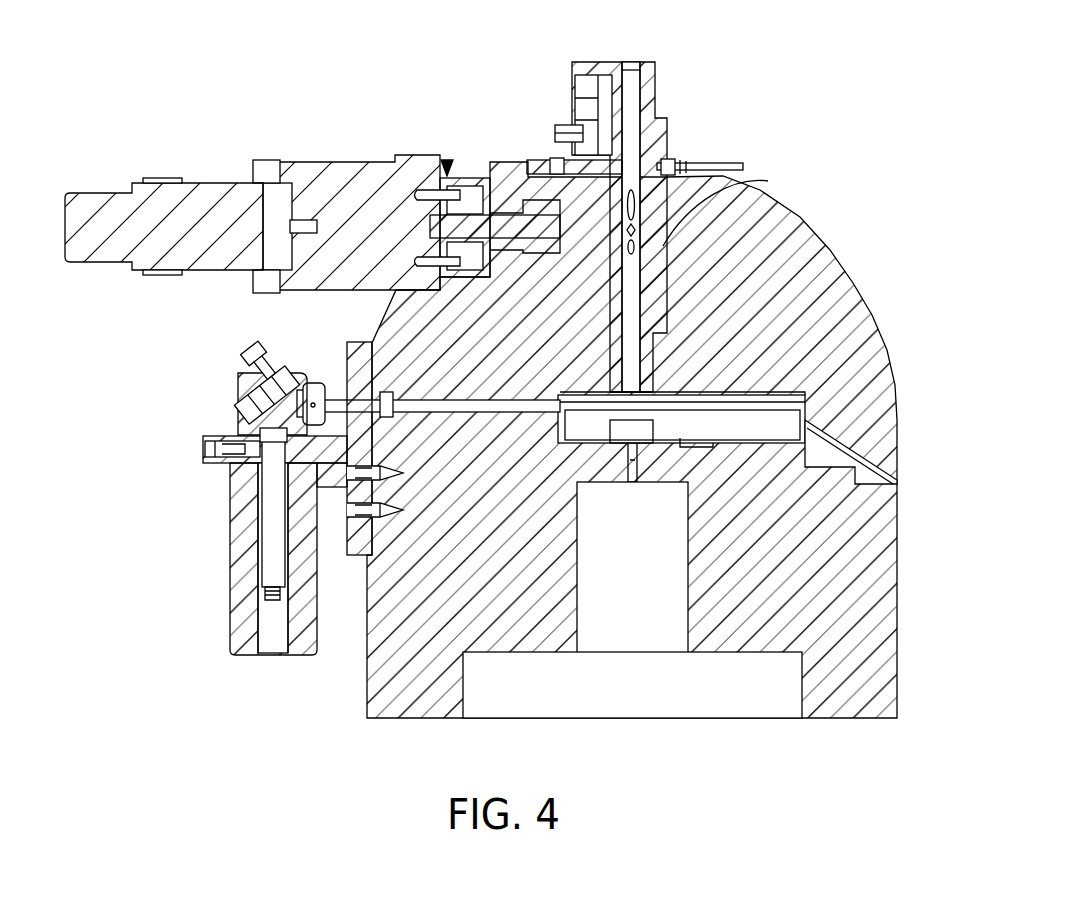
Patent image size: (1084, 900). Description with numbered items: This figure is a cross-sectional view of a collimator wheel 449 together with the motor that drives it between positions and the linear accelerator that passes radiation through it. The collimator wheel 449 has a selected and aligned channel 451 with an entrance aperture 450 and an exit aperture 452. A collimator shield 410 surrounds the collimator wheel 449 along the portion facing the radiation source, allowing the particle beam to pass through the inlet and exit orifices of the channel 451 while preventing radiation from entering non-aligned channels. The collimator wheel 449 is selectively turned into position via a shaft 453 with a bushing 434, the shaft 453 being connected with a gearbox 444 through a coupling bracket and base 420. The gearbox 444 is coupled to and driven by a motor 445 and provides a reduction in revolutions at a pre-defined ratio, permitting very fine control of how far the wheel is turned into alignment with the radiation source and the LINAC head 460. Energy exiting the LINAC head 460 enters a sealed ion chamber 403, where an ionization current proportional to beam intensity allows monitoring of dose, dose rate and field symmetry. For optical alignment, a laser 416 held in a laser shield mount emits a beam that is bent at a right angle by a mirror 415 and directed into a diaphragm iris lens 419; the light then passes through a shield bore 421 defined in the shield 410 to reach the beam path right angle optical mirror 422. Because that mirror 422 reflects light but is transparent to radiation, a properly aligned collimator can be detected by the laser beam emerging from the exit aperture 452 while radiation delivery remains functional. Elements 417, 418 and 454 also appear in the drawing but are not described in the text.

The sealed ion chamber 403 is at (764, 447).
The collimator shield 410 is at (802, 231).
The mirror 415 is at (223, 374).
The laser 416 is at (262, 537).
The bolt head 417 is at (238, 398).
The mounting block assembly 418 is at (270, 498).
The diaphragm iris lens 419 is at (316, 385).
The coupling bracket and base 420 is at (445, 160).
The shield bore 421 is at (440, 402).
The beam path right angle optical mirror 422 is at (705, 389).
The bushing 434 is at (543, 212).
The gearbox 444 is at (347, 158).
The motor 445 is at (126, 200).
The collimator wheel 449 is at (733, 205).
The entrance aperture 450 is at (650, 381).
The channel 451 is at (640, 77).
The exit aperture 452 is at (638, 74).
The shaft 453 is at (568, 186).
The bolt 454 is at (672, 164).
The LINAC head 460 is at (652, 648).